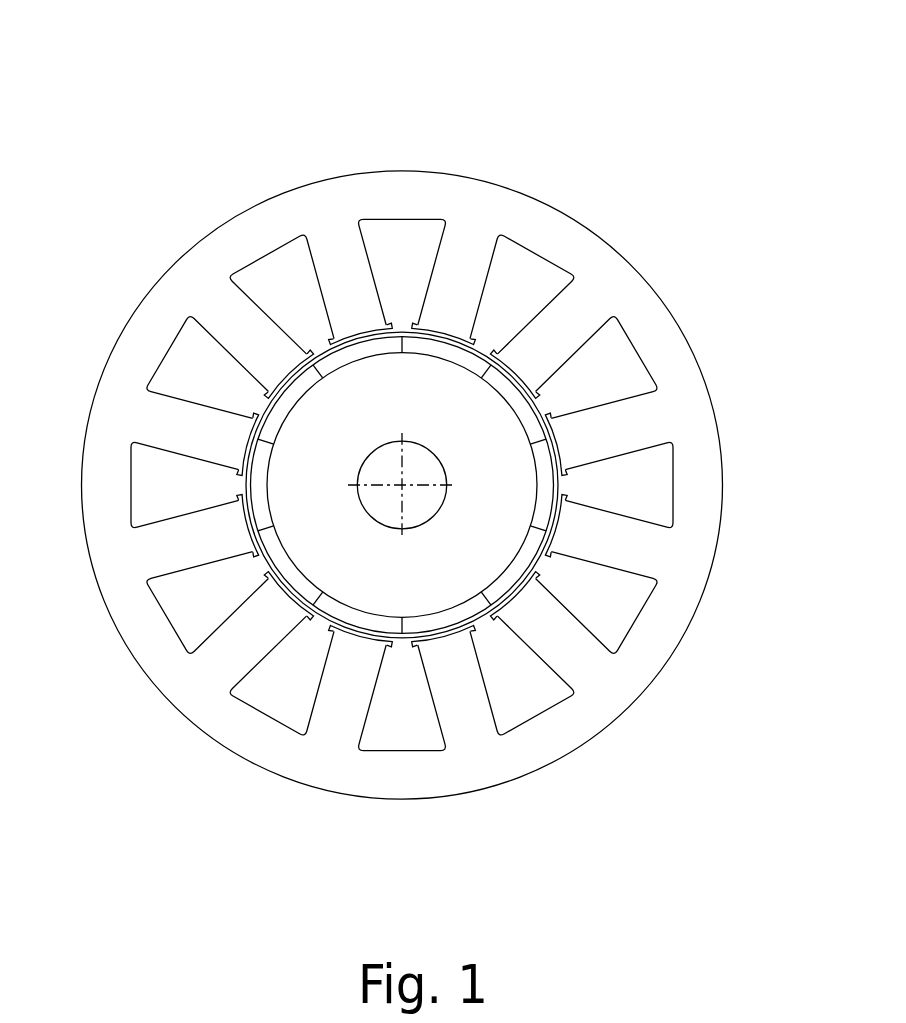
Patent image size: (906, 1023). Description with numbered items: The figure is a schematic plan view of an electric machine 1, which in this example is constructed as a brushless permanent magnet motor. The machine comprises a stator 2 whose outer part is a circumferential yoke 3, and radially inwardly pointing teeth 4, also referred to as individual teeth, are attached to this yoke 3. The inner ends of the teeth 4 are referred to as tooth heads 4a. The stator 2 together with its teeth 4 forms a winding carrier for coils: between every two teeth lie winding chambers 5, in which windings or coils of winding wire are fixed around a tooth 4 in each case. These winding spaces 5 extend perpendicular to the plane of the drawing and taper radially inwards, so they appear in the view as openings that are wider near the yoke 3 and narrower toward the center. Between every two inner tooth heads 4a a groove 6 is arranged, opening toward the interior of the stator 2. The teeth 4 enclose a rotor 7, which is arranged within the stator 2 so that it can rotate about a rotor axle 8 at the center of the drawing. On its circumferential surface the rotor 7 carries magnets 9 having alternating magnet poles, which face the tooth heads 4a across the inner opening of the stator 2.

The electric machine 1 is at (435, 450).
The stator 2 is at (437, 450).
The circumferential yoke 3 is at (575, 238).
The teeth 4 is at (515, 477).
The tooth heads 4a is at (568, 442).
The winding chambers 5 is at (410, 258).
The groove 6 is at (375, 572).
The rotor 7 is at (320, 538).
The rotor axle 8 is at (400, 488).
The magnets 9 is at (517, 577).